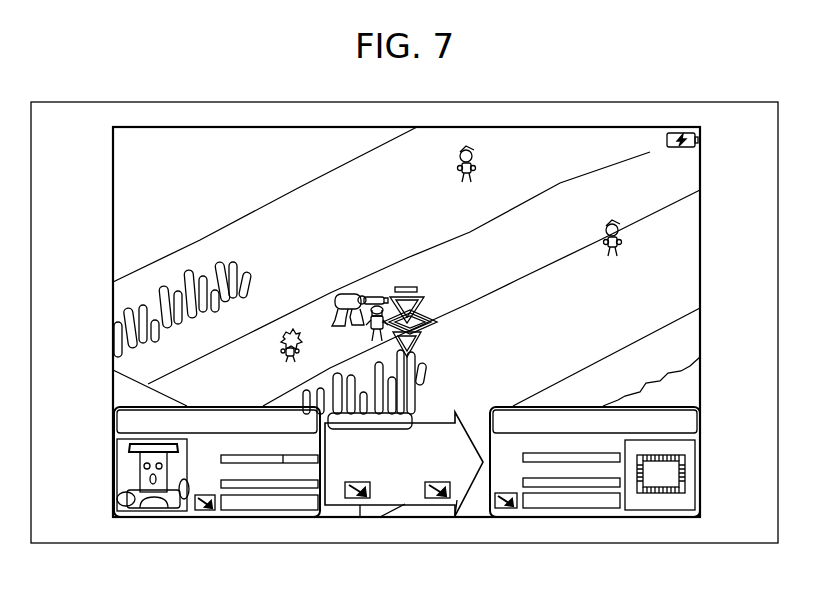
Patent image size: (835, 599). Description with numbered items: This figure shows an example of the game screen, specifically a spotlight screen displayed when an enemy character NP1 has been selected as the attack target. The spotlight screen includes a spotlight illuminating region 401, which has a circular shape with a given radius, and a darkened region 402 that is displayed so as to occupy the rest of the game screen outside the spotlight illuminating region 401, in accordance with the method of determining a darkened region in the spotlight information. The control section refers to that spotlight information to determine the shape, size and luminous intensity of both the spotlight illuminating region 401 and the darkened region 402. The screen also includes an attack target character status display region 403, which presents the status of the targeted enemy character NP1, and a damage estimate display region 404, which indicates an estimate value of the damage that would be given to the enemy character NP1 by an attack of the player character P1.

The spotlight illuminating region 401 is at (498, 323).
The darkened region 402 is at (677, 278).
The attack target character status display region 403 is at (603, 517).
The damage estimate display region 404 is at (410, 505).
The player character P1 is at (367, 332).
The enemy character NP1 is at (417, 295).